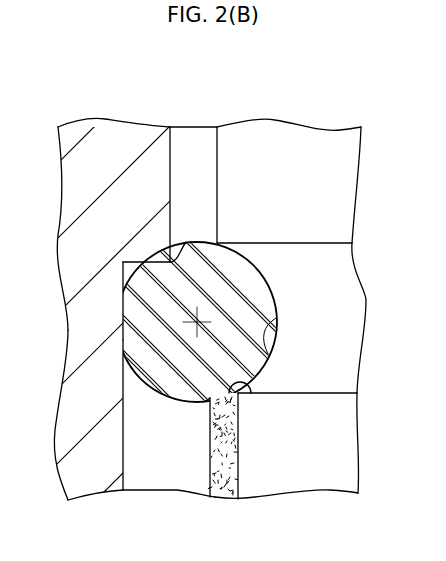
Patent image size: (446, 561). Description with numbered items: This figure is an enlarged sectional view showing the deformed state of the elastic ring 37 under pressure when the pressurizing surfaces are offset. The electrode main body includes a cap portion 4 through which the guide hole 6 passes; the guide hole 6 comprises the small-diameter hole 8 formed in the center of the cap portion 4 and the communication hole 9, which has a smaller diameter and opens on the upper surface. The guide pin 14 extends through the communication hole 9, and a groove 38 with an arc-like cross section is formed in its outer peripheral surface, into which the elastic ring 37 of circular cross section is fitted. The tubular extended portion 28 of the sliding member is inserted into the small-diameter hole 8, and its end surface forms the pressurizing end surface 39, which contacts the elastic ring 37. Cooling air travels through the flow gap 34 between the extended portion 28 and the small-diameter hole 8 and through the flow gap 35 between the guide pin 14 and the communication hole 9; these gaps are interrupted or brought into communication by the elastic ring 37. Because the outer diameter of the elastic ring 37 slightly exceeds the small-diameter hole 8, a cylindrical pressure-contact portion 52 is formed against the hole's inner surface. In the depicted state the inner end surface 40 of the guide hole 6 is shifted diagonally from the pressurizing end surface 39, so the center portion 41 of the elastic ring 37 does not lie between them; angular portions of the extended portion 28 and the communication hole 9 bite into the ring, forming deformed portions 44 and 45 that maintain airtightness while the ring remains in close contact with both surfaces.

The cap portion 4 is at (80, 387).
The guide hole 6 is at (177, 478).
The small-diameter hole 8 is at (122, 463).
The communication hole 9 is at (168, 186).
The guide pin 14 is at (340, 170).
The extended portion 28 is at (235, 454).
The flow gap 34 is at (147, 480).
The flow gap 35 is at (217, 143).
The elastic ring 37 is at (266, 272).
The groove 38 is at (272, 348).
The pressurizing end surface 39 is at (243, 387).
The inner end surface 40 is at (120, 268).
The center portion 41 is at (202, 310).
The deformed portion 44 is at (205, 400).
The deformed portion 45 is at (174, 256).
The pressure-contact portion 52 is at (122, 308).